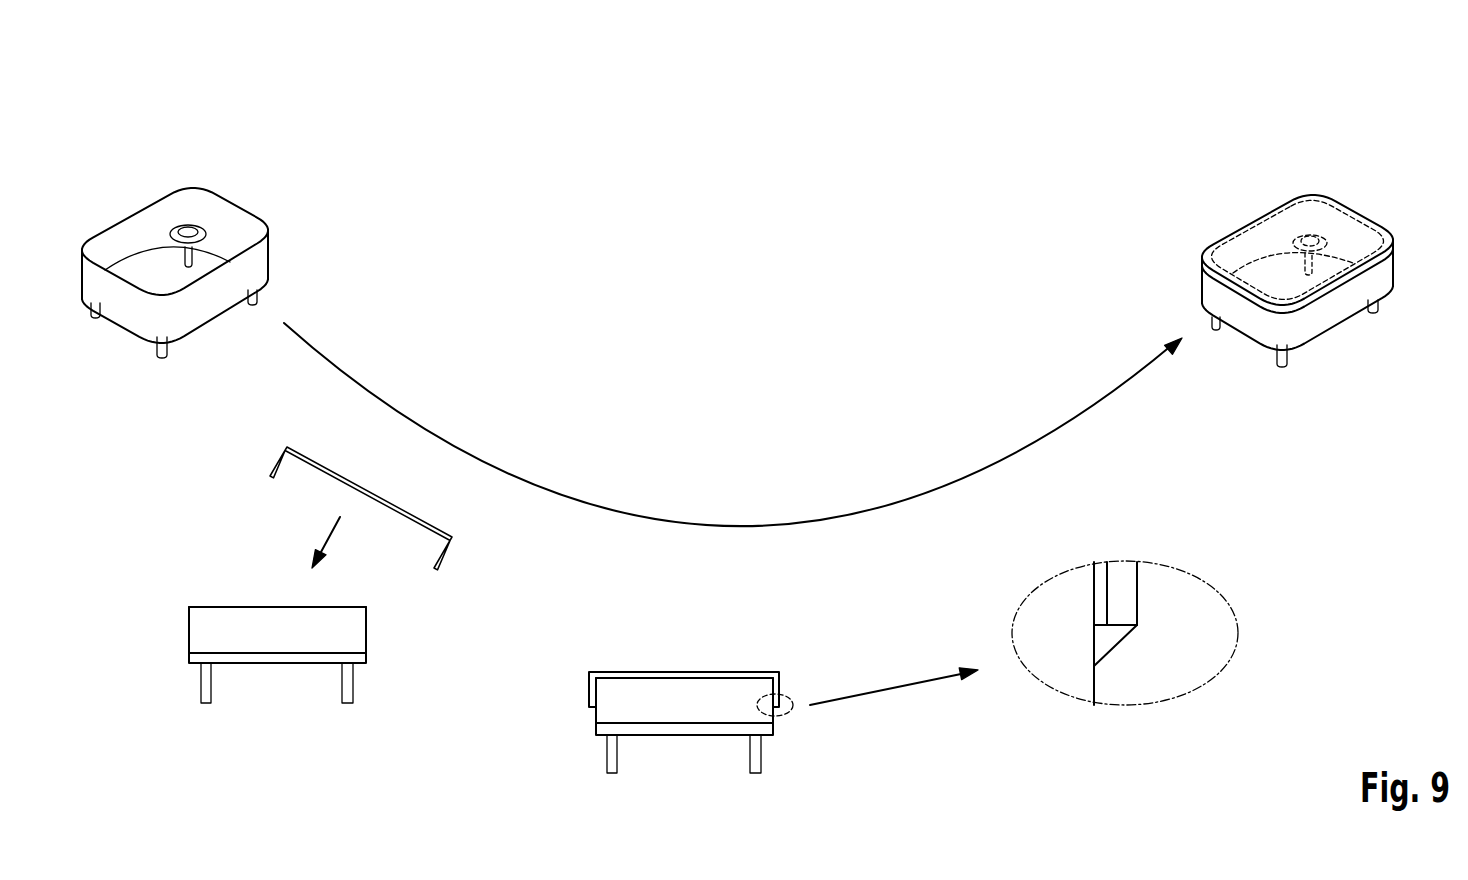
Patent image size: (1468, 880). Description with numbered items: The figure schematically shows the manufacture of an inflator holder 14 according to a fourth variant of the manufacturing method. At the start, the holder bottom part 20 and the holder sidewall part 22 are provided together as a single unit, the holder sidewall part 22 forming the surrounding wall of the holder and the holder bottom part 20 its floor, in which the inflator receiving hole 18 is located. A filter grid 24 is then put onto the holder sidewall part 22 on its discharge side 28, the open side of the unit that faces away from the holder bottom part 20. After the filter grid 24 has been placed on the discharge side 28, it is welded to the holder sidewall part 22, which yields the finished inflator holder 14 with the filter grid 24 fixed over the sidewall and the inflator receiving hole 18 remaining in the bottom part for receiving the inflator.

The inflator holder 14 is at (1165, 177).
The inflator receiving hole 18 is at (145, 273).
The holder bottom part 20 is at (215, 245).
The holder sidewall part 22 is at (255, 262).
The filter grid 24 is at (272, 470).
The discharge side 28 is at (236, 607).